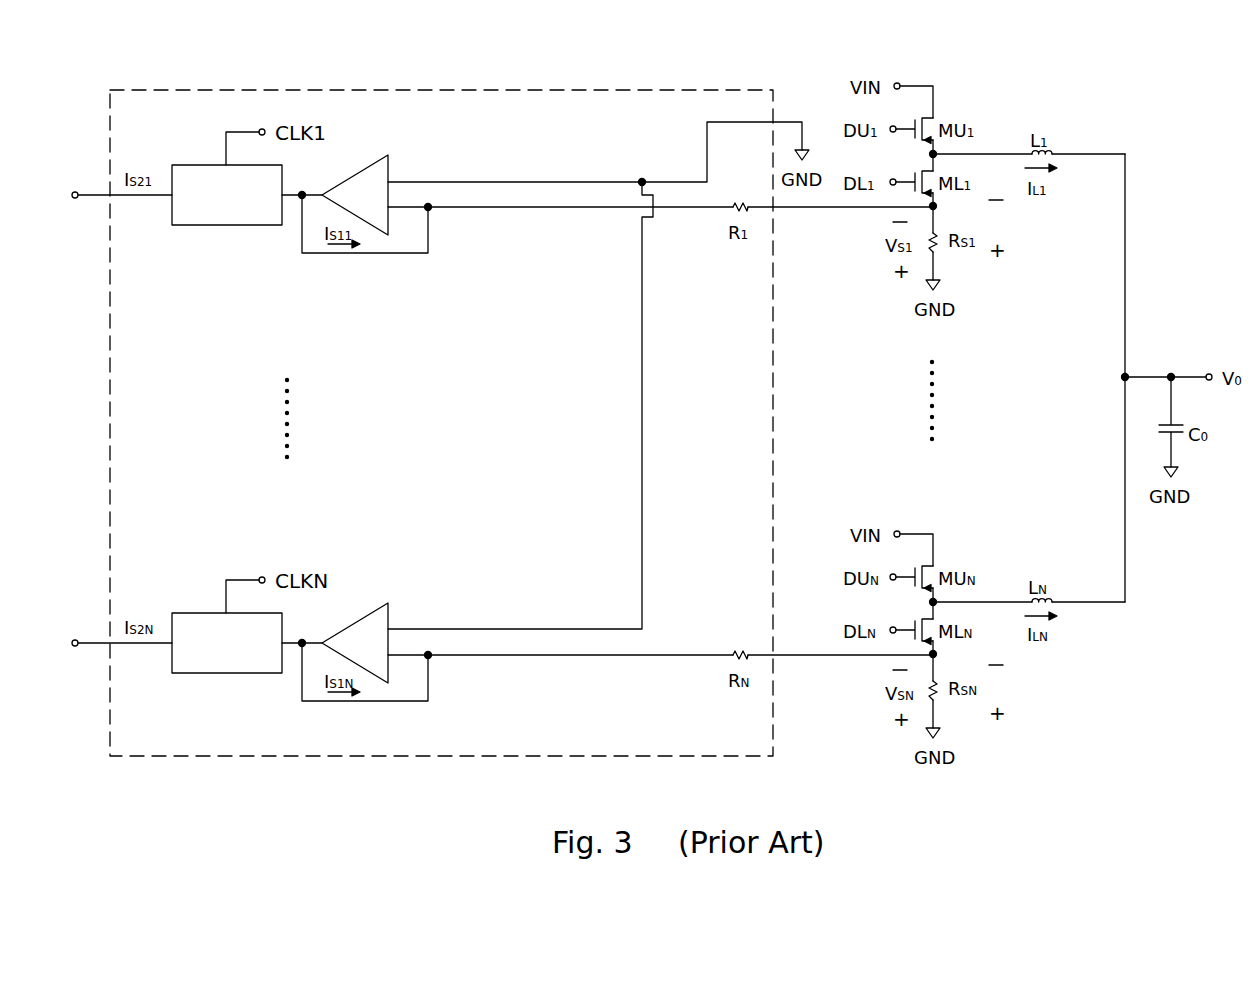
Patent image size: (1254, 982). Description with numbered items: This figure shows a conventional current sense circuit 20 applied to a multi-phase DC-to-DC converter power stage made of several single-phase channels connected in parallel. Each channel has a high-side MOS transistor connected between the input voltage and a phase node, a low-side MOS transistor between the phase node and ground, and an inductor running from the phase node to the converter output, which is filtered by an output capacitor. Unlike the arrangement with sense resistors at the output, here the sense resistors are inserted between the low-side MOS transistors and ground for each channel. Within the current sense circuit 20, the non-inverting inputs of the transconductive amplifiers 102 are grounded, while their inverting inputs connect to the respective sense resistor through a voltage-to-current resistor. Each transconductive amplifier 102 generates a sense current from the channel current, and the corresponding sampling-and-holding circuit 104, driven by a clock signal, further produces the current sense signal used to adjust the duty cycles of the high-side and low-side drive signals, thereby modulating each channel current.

The current sense circuit 20 is at (472, 90).
The transconductive amplifier 102 is at (353, 171).
The sampling-and-holding circuit 104 is at (242, 226).